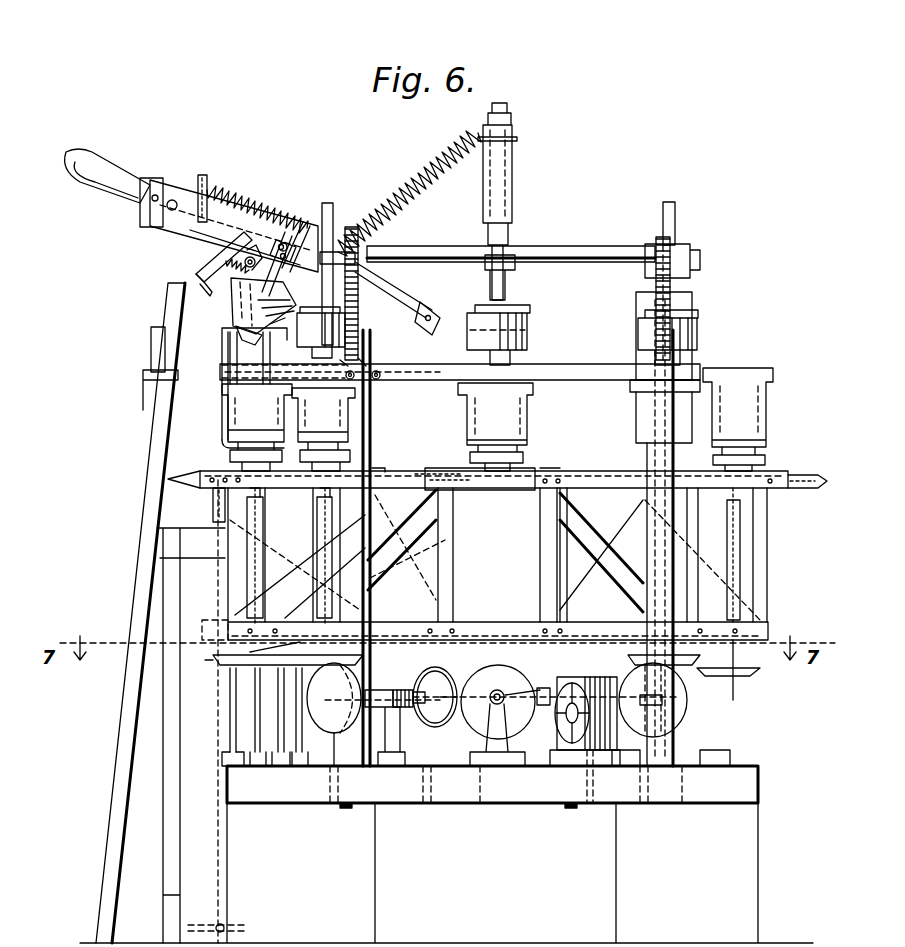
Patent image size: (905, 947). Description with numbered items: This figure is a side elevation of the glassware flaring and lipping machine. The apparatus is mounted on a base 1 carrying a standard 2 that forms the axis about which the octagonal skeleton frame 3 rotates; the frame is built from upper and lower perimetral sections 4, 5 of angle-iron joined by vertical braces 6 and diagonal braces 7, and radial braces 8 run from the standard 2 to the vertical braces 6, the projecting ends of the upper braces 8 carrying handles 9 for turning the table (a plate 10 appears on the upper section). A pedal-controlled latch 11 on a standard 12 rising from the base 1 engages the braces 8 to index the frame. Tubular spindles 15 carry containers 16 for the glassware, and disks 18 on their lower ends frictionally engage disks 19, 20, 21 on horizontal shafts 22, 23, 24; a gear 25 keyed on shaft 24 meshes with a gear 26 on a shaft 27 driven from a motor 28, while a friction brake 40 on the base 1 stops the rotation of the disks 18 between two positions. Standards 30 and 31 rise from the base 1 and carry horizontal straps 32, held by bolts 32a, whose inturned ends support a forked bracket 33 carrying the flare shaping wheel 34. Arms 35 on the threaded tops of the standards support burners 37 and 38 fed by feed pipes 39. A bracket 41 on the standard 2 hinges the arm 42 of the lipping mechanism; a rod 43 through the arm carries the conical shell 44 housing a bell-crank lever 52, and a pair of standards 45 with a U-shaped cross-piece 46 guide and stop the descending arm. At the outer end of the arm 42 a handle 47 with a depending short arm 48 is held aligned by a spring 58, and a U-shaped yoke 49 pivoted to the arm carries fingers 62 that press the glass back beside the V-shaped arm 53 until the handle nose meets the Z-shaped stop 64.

The base 1 is at (446, 854).
The standard 2 is at (510, 108).
The skeleton frame 3 is at (594, 525).
The upper perimetral section 4 is at (395, 470).
The lower perimetral section 5 is at (410, 624).
The vertical braces 6 is at (760, 553).
The diagonal braces 7 is at (398, 530).
The radial braces 8 is at (378, 465).
The handles 9 is at (800, 475).
The beam plate 10 is at (423, 471).
The latch 11 is at (213, 505).
The standard 12 is at (155, 527).
The tubular spindles 15 is at (312, 545).
The containers 16 is at (497, 419).
The disks 18 is at (290, 668).
The disk 19 is at (655, 712).
The disk 20 is at (560, 715).
The disk 21 is at (373, 714).
The horizontal shaft 22 is at (582, 688).
The horizontal shaft 23 is at (520, 690).
The horizontal shaft 24 is at (383, 688).
The gear 25 is at (425, 712).
The gear 26 is at (412, 688).
The shaft 27 is at (450, 720).
The motor 28 is at (600, 776).
The standard 30 is at (640, 405).
The standard 31 is at (386, 582).
The horizontal straps 32 is at (438, 378).
The bolts 32a is at (362, 368).
The forked bracket 33 is at (222, 352).
The flare shaping wheel 34 is at (308, 364).
The arms 35 is at (425, 248).
The burner 37 is at (527, 330).
The burner 38 is at (348, 335).
The feed pipes 39 is at (328, 208).
The friction brake 40 is at (290, 727).
The bracket 41 is at (446, 322).
The arm 42 is at (405, 303).
The rod 43 is at (277, 268).
The shell 44 is at (232, 300).
The standards 45 is at (150, 481).
The U-shaped cross-piece 46 is at (150, 358).
The handle 47 is at (110, 172).
The short arm 48 is at (145, 210).
The U-shaped yoke 49 is at (205, 262).
The bell-crank lever 52 is at (283, 238).
The V-shaped arm 53 is at (232, 280).
The spring 58 is at (250, 200).
The fingers 62 is at (197, 278).
The Z-shaped stop 64 is at (206, 180).